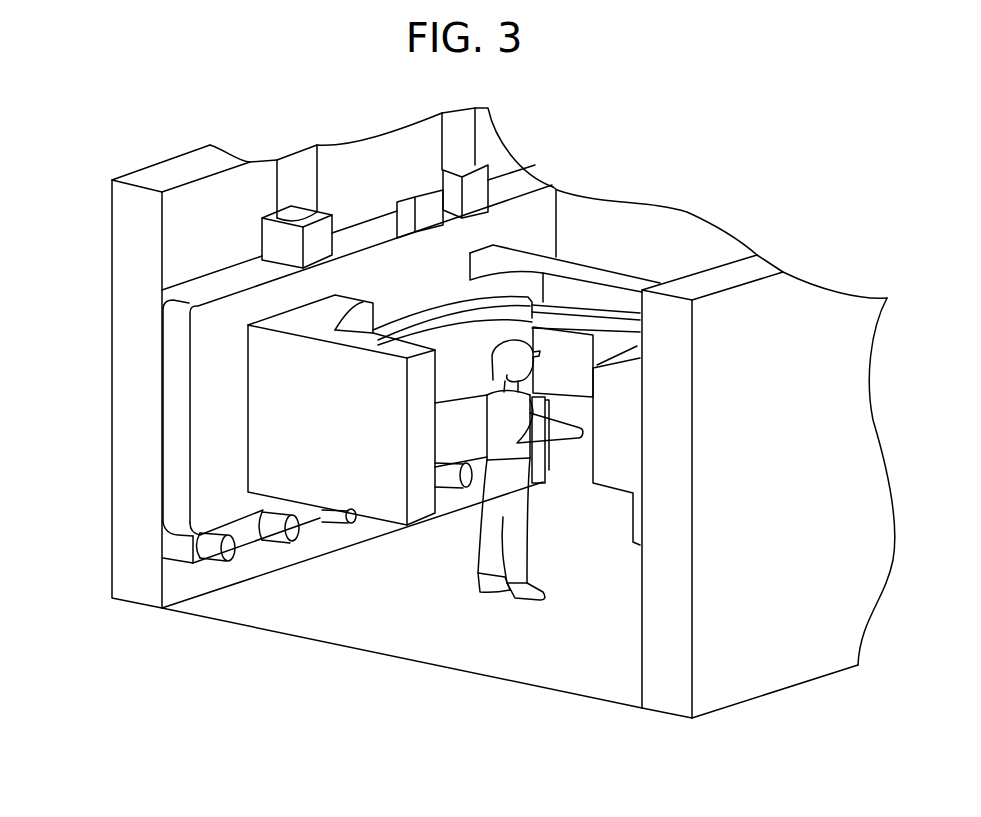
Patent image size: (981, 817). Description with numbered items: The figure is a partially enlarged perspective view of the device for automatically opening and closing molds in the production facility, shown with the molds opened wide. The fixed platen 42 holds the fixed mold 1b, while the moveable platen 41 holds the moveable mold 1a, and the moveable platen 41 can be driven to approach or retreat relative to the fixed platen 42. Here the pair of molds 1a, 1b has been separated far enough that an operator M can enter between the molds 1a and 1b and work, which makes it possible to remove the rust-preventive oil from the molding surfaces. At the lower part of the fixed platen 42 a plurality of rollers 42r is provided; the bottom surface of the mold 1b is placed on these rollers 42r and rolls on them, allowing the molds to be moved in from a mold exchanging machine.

The moveable platen 41 is at (673, 653).
The fixed platen 42 is at (112, 202).
The rollers 42r is at (218, 552).
The moveable mold 1a is at (613, 467).
The fixed mold 1b is at (210, 395).
The operator M is at (477, 593).